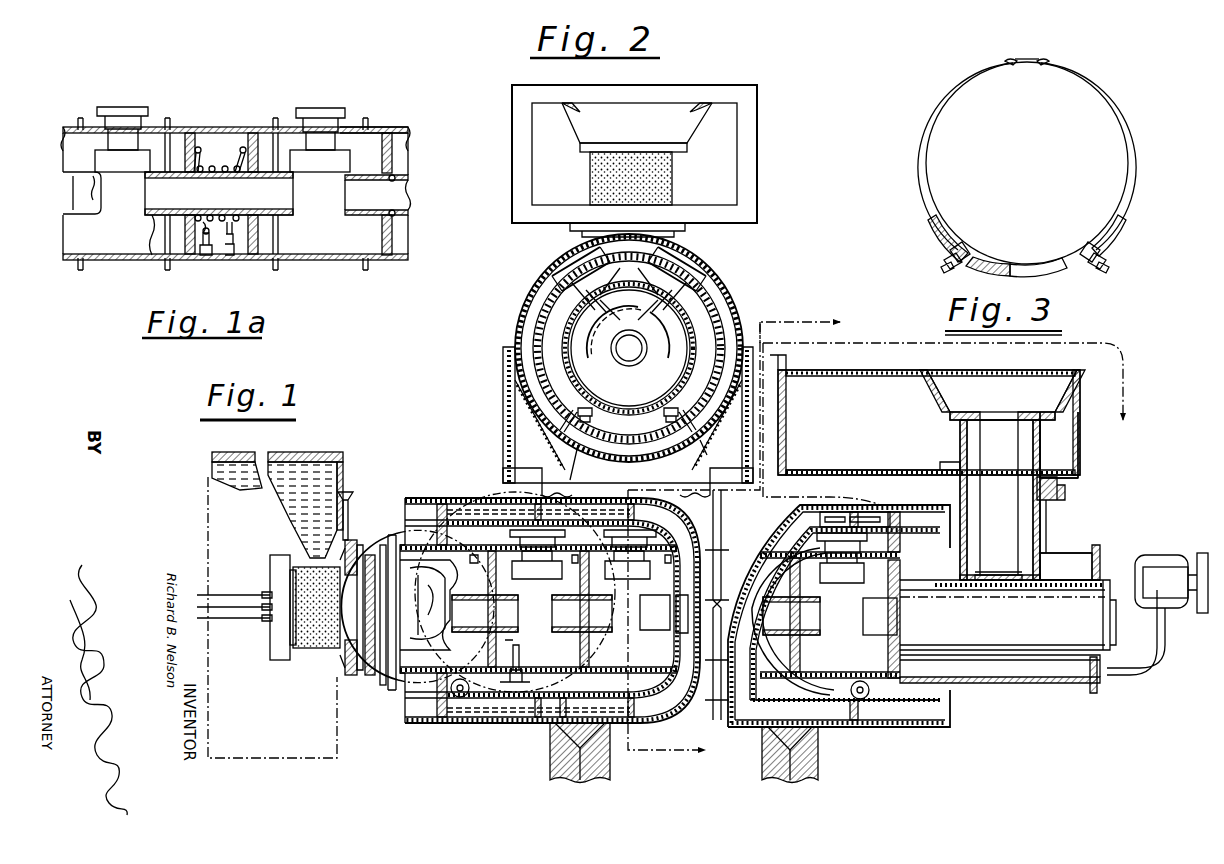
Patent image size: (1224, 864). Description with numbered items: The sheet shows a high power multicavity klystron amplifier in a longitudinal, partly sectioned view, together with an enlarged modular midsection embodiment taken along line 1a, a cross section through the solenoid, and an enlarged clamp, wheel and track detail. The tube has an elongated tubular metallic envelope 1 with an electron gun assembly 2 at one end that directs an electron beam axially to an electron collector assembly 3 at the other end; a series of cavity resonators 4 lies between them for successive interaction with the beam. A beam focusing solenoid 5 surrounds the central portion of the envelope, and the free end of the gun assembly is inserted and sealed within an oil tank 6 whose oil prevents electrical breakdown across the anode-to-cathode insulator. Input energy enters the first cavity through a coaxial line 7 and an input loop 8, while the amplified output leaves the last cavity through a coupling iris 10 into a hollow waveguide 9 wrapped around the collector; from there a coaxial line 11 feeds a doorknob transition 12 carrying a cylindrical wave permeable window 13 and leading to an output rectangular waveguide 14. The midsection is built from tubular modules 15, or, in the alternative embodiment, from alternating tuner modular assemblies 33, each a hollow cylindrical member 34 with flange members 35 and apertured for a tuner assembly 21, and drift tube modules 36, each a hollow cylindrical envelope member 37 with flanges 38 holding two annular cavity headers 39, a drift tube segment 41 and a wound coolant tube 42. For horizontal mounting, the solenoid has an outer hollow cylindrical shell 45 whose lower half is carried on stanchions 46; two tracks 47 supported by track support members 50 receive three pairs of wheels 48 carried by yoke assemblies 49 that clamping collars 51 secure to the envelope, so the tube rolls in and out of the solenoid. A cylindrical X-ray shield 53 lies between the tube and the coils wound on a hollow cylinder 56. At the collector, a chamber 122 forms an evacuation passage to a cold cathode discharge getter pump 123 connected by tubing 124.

In FIG. 1A, the tubular metallic envelope 1 is at (408, 108).
In FIG. 1, the tubular metallic envelope 1 is at (398, 525).
In FIG. 1, the section line 1a— 1a is at (683, 620).
In FIG. 1, the electron gun assembly 2 is at (385, 555).
In FIG. 1, the electron collector assembly 3 is at (1004, 728).
In FIG. 1A, the cavity resonator 4 is at (118, 225).
In FIG. 1, the cavity resonator 4 is at (345, 566).
In FIG. 1, the beam focusing solenoid 5 is at (462, 496).
In FIG. 1, the oil tank 6 is at (325, 452).
In FIG. 1, the coaxial line 7 is at (480, 588).
In FIG. 1, the input loop 8 is at (518, 668).
In FIG. 1, the hollow waveguide 9 is at (1075, 553).
In FIG. 1, the coupling iris 10 is at (1000, 532).
In FIG. 1, the coaxial line 11 is at (1052, 520).
In FIG. 2, the doorknob transition 12 is at (575, 148).
In FIG. 1, the doorknob transition 12 is at (1068, 405).
In FIG. 2, the cylindrical wave permeable window 13 is at (628, 174).
In FIG. 1, the cylindrical wave permeable window 13 is at (960, 438).
In FIG. 2, the output rectangular waveguide 14 is at (737, 148).
In FIG. 1, the output rectangular waveguide 14 is at (845, 370).
In FIG. 1, the tubular module 15 is at (512, 548).
In FIG. 1A, the tuner assembly 21 is at (330, 104).
In FIG. 2, the tuner assembly 21 is at (580, 262).
In FIG. 1A, the tuner modular assembly 33 is at (342, 282).
In FIG. 1A, the hollow cylindrical member 34 is at (316, 258).
In FIG. 1A, the flange member 35 is at (266, 264).
In FIG. 1A, the drift tube module 36 is at (240, 268).
In FIG. 1A, the hollow cylindrical envelope member 37 is at (180, 262).
In FIG. 1A, the flange 38 is at (186, 258).
In FIG. 1A, the annular cavity header 39 is at (218, 258).
In FIG. 1A, the drift tube segment 41 is at (392, 182).
In FIG. 1A, the coolant tube 42 is at (202, 148).
In FIG. 2, the outer hollow cylindrical shell 45 is at (727, 283).
In FIG. 1, the outer hollow cylindrical shell 45 is at (415, 724).
In FIG. 2, the stanchion 46 is at (503, 416).
In FIG. 1, the stanchion 46 is at (600, 765).
In FIG. 2, the track 47 is at (655, 428).
In FIG. 3, the track 47 is at (1060, 283).
In FIG. 2, the wheel 48 is at (584, 406).
In FIG. 3, the wheel 48 is at (950, 274).
In FIG. 1, the wheel 48 is at (452, 700).
In FIG. 2, the yoke assembly 49 is at (605, 412).
In FIG. 3, the yoke assembly 49 is at (1087, 252).
In FIG. 2, the track support member 50 is at (638, 465).
In FIG. 3, the clamping collar 51 is at (1126, 152).
In FIG. 2, the cylindrical X-ray shield 53 is at (543, 326).
In FIG. 1, the cylindrical X-ray shield 53 is at (480, 530).
In FIG. 1, the hollow cylinder 56 is at (548, 722).
In FIG. 1, the chamber 122 is at (1060, 672).
In FIG. 1, the cold cathode discharge getter pump 123 is at (1160, 555).
In FIG. 1, the tubing 124 is at (1160, 678).